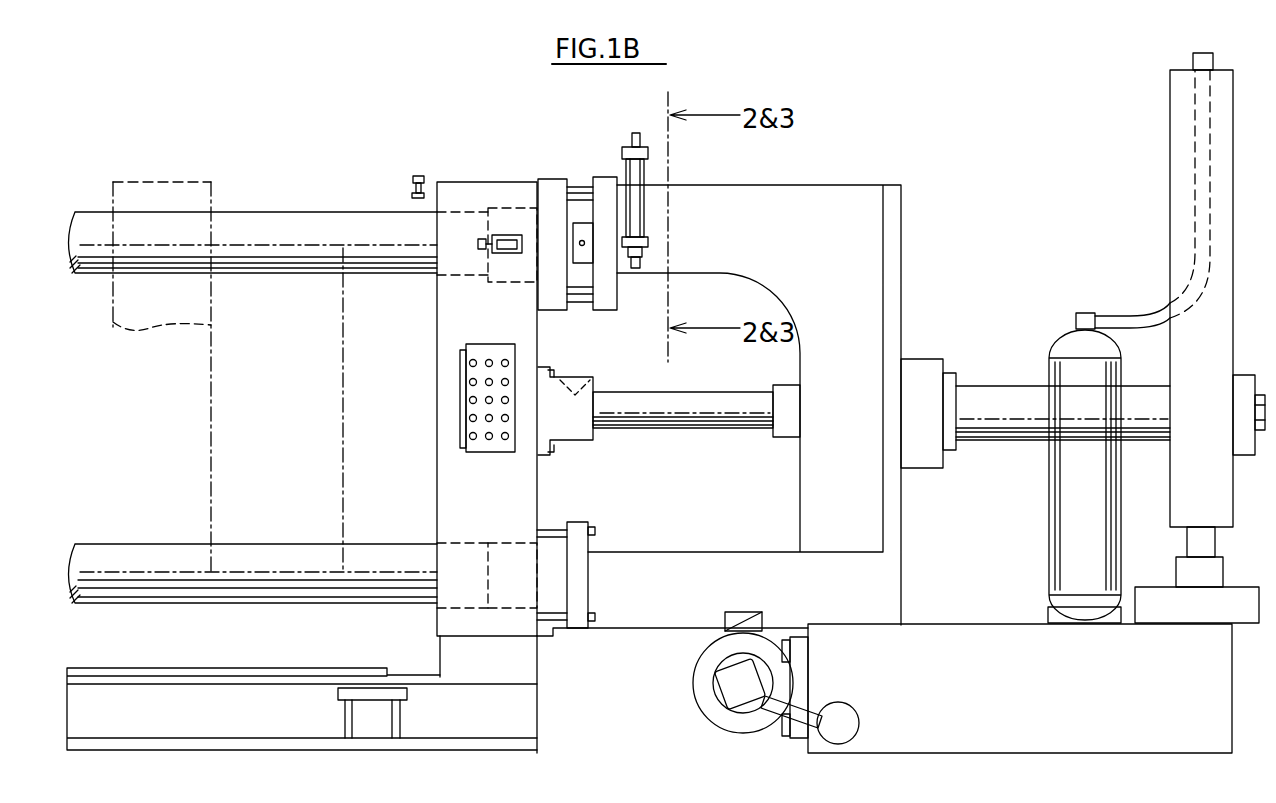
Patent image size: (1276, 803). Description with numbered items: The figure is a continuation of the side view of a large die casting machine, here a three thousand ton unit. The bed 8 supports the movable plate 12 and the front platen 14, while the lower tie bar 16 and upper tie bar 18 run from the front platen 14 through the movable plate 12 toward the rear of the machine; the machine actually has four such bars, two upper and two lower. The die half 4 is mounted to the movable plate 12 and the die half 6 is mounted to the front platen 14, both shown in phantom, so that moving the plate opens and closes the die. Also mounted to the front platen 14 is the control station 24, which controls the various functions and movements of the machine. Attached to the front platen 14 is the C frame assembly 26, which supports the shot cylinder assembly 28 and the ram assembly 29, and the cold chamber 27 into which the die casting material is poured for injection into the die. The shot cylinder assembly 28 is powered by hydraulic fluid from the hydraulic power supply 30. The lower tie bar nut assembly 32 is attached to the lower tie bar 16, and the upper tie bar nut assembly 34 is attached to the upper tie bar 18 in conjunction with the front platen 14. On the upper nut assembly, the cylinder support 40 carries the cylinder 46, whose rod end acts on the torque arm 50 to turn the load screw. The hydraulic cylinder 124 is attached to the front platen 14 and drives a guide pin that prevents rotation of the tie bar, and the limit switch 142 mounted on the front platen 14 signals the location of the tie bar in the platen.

The die half 4 is at (293, 452).
The die half 6 is at (400, 450).
The bed 8 is at (248, 702).
The movable plate 12 is at (156, 183).
The front platen 14 is at (508, 508).
The lower tie bar 16 is at (165, 593).
The upper tie bar 18 is at (310, 227).
The control station 24 is at (470, 368).
The C frame assembly 26 is at (845, 196).
The cold chamber 27 is at (585, 392).
The shot cylinder assembly 28 is at (990, 394).
The ram assembly 29 is at (709, 418).
The hydraulic power supply 30 is at (982, 614).
The lower tie bar nut assembly 32 is at (548, 527).
The upper tie bar nut assembly 34 is at (569, 160).
The cylinder support 40 is at (594, 176).
The cylinder 46 is at (630, 217).
The torque arm 50 is at (634, 270).
The hydraulic cylinder 124 is at (420, 175).
The limit switch 142 is at (507, 240).